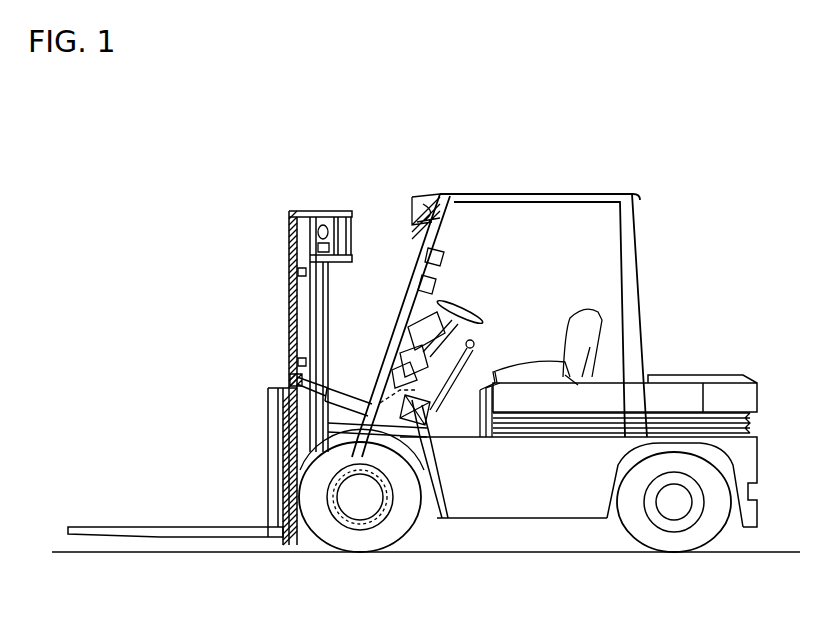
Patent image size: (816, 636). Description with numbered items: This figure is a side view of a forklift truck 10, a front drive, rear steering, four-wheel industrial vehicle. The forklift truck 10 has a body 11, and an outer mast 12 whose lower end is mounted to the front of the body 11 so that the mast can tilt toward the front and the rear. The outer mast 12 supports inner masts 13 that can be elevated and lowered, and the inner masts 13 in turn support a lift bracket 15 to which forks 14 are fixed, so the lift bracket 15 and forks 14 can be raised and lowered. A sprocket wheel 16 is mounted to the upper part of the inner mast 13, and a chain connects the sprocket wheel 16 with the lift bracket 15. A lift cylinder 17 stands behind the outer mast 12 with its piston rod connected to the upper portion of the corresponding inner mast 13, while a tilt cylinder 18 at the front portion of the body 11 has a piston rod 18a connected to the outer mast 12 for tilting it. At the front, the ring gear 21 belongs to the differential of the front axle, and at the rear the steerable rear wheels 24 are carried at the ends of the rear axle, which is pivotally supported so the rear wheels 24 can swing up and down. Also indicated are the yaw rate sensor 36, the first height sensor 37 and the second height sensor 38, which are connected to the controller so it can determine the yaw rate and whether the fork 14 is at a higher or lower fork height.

The forklift truck 10 is at (720, 179).
The body 11 is at (708, 375).
The outer mast 12 is at (289, 230).
The inner mast 13 is at (289, 282).
The fork 14 is at (122, 527).
The lift bracket 15 is at (268, 440).
The sprocket wheel 16 is at (318, 210).
The lift cylinder 17 is at (328, 320).
The tilt cylinder 18 is at (358, 388).
The piston rod 18a is at (292, 378).
The ring gear 21 is at (355, 540).
The rear wheel 24 is at (722, 545).
The yaw rate sensor 36 is at (436, 401).
The first height sensor 37 is at (328, 282).
The second height sensor 38 is at (300, 360).